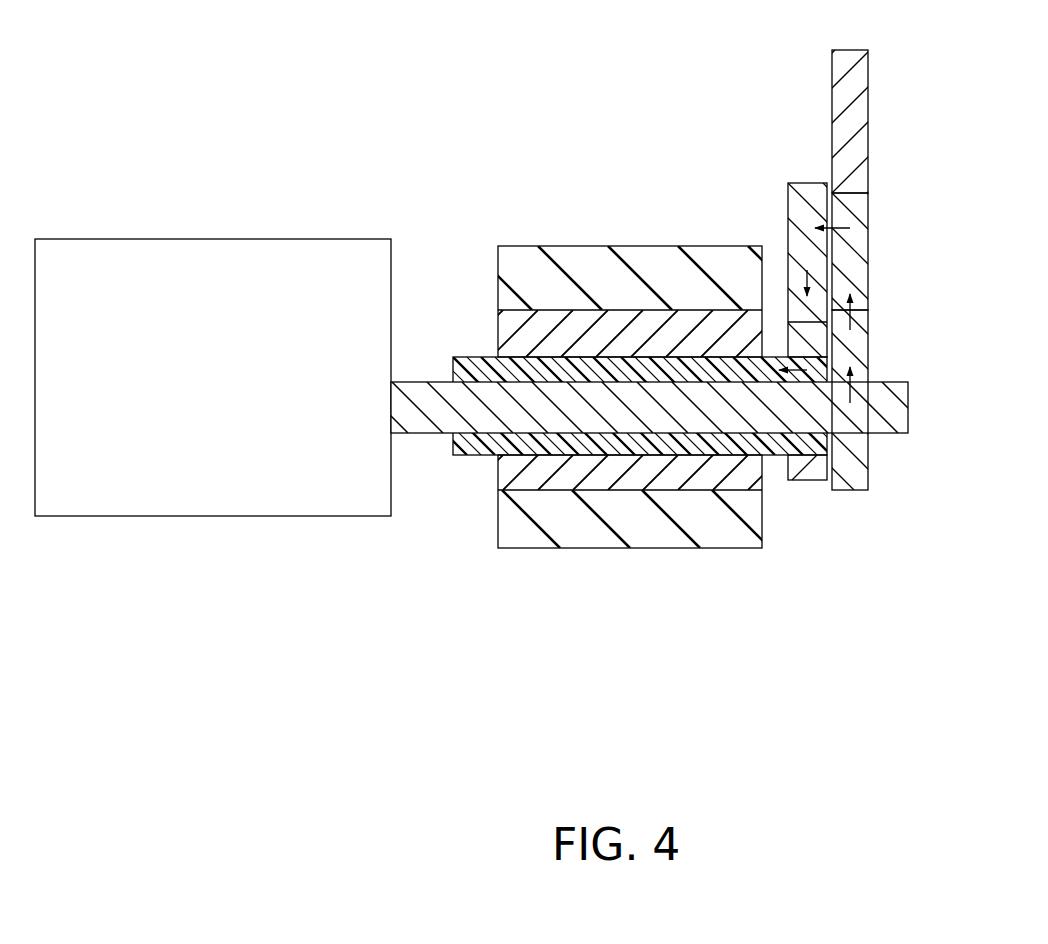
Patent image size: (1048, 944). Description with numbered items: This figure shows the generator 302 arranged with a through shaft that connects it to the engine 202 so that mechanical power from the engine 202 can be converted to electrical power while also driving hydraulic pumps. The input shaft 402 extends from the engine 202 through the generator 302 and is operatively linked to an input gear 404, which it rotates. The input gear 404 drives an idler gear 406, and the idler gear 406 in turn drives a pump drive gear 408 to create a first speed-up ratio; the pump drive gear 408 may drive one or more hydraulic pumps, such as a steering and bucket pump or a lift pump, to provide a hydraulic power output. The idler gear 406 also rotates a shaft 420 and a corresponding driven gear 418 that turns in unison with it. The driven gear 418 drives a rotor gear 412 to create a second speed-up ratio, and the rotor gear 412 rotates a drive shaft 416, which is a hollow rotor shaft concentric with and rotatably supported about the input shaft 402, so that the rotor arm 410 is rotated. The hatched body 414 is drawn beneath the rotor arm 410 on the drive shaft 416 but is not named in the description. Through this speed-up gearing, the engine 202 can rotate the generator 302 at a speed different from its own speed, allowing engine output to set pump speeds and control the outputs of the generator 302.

The engine 202 is at (213, 377).
The generator 302 is at (622, 185).
The input shaft 402 is at (908, 405).
The input gear 404 is at (868, 341).
The idler gear 406 is at (868, 235).
The pump drive gear 408 is at (868, 139).
The rotor arm 410 is at (498, 338).
The rotor gear 412 is at (812, 482).
The lower damper body 414 is at (648, 549).
The drive shaft 416 is at (468, 456).
The driven gear 418 is at (788, 205).
The shaft 420 is at (772, 265).